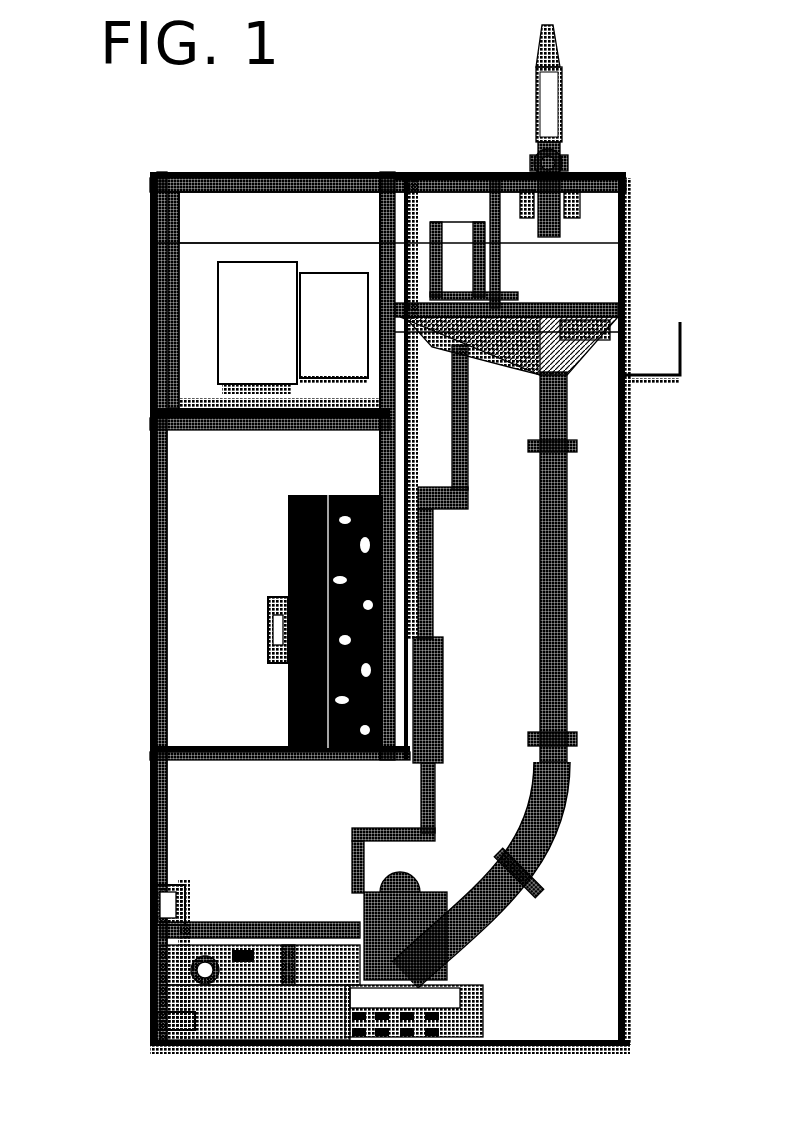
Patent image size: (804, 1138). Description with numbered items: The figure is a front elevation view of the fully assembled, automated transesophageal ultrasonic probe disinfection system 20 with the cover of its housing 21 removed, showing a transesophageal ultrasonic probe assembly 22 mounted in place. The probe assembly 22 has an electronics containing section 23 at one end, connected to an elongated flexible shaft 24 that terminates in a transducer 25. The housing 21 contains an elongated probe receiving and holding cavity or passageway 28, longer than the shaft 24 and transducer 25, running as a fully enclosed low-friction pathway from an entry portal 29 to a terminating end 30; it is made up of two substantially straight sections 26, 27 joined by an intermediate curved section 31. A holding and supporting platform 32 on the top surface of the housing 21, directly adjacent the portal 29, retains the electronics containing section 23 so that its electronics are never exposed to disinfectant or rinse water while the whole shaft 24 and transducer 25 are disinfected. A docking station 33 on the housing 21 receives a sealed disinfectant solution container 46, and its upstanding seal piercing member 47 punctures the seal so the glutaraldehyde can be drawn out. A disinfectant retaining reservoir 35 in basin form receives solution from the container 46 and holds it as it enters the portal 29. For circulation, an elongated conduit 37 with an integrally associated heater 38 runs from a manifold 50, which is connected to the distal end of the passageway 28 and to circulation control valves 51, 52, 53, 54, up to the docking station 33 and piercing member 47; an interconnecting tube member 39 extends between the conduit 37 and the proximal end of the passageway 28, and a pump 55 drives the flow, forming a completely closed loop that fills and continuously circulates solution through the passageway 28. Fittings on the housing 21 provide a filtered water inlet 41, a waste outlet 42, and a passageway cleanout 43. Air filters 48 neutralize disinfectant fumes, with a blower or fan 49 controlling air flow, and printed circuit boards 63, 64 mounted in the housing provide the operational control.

The transesophageal ultrasonic probe disinfection system 20 is at (72, 470).
The housing 21 is at (628, 618).
The transesophageal ultrasonic probe assembly 22 is at (562, 108).
The electronics containing section 23 is at (586, 176).
The elongated flexible shaft 24 is at (557, 835).
The transducer 25 is at (238, 960).
The straight section 26 is at (567, 485).
The straight section 27 is at (300, 960).
The probe receiving and holding cavity/passageway 28 is at (560, 542).
The entry portal 29 is at (568, 390).
The terminating end 30 is at (232, 955).
The curved section 31 is at (518, 905).
The holding and supporting platform 32 is at (630, 188).
The docking station 33 is at (431, 350).
The disinfectant retaining reservoir 35 is at (612, 345).
The elongated conduit 37 is at (437, 536).
The heater 38 is at (443, 690).
The interconnecting tube member 39 is at (505, 375).
The water inlet 41 is at (153, 928).
The waste outlet 42 is at (153, 1025).
The passageway cleanout 43 is at (160, 975).
The disinfectant solution container 46 is at (452, 235).
The seal piercing member 47 is at (395, 325).
The air filters 48 is at (360, 498).
The blower or fan 49 is at (272, 615).
The manifold 50 is at (455, 980).
The valve (V1) 51 is at (405, 1045).
The valve (V2) 52 is at (447, 1047).
The valve (V3) 53 is at (493, 1047).
The valve (V4) 54 is at (348, 1047).
The pump 55 is at (440, 893).
The printed circuit board 63 is at (272, 331).
The printed circuit board 64 is at (320, 285).